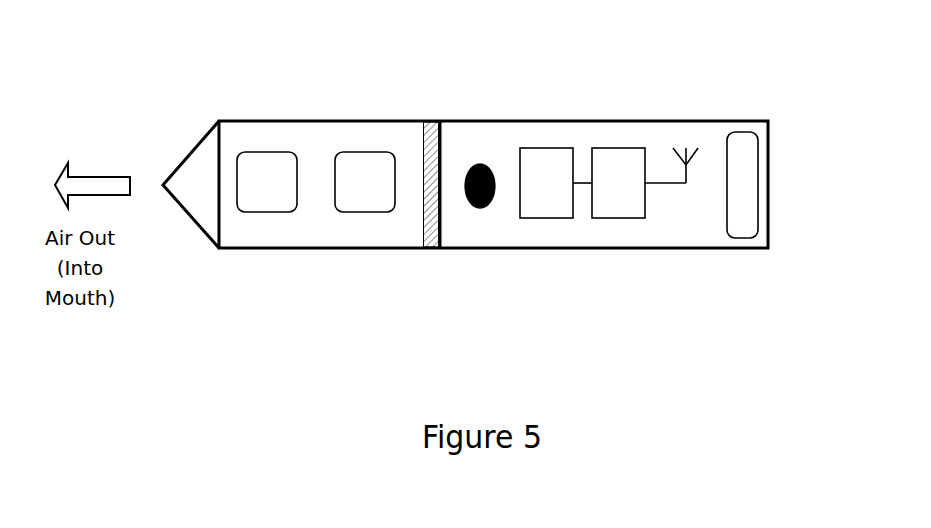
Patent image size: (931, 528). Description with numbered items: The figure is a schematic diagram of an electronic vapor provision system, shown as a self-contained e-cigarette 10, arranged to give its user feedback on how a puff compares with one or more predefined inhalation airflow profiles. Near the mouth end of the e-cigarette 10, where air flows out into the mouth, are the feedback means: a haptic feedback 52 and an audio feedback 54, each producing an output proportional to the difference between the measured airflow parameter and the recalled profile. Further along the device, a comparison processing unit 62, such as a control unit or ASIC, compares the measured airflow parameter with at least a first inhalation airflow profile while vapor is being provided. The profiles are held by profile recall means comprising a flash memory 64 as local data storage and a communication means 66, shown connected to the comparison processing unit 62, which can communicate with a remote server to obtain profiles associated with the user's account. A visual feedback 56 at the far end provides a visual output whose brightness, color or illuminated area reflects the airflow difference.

The e-cigarette 10 is at (444, 275).
The haptic feedback 52 is at (249, 127).
The audio feedback 54 is at (385, 232).
The visual feedback 56 is at (777, 241).
The comparison processing unit 62 is at (644, 235).
The flash memory 64 is at (571, 235).
The communication means 66 is at (719, 116).